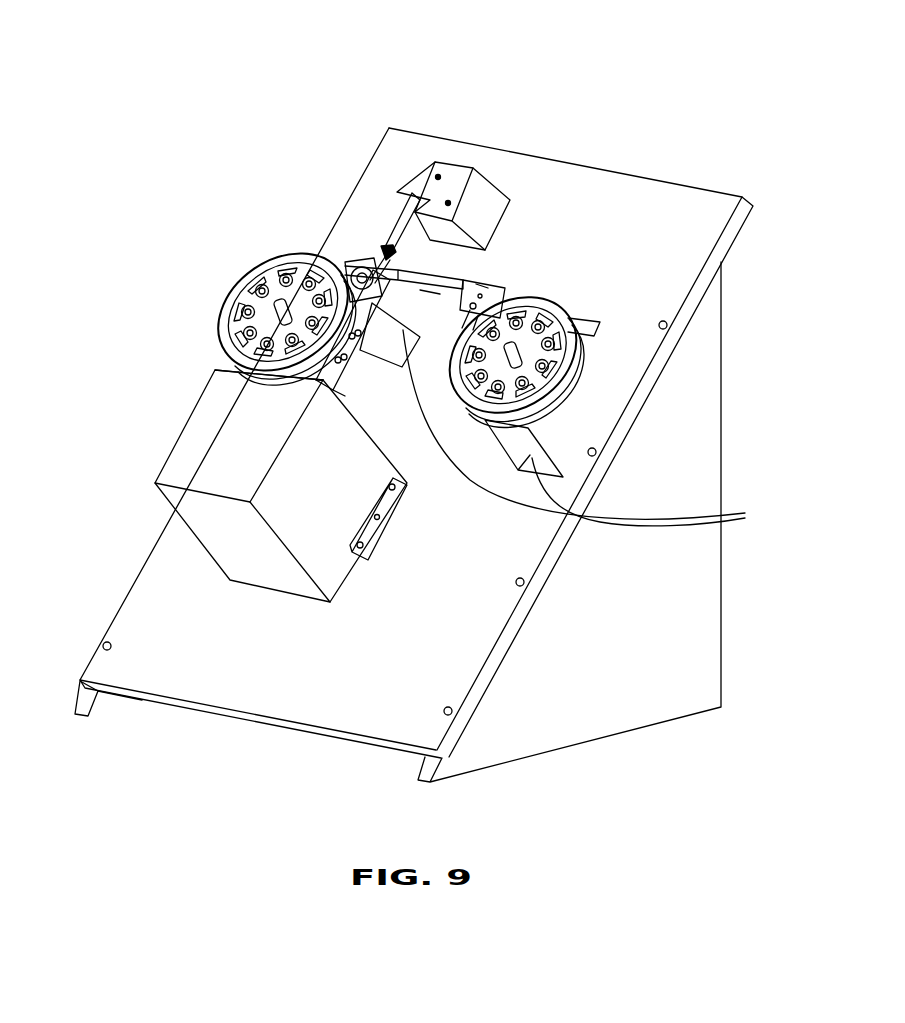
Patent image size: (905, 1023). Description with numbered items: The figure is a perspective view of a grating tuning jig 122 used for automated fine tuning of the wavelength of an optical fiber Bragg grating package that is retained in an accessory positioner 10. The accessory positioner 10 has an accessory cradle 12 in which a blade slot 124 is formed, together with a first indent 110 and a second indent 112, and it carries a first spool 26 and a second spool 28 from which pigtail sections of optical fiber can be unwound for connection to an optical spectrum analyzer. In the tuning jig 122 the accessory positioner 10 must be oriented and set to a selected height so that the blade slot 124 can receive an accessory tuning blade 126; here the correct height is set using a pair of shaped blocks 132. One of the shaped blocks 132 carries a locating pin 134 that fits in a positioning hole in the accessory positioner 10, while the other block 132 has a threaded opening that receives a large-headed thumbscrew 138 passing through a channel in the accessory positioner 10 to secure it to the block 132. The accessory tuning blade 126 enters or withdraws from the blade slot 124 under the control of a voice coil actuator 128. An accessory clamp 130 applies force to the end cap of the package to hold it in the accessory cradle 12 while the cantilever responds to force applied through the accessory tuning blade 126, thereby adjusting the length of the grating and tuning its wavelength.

The accessory positioner 10 is at (231, 250).
The accessory cradle 12 is at (428, 290).
The first spool 26 is at (580, 325).
The second spool 28 is at (230, 302).
The first indent 110 is at (452, 283).
The second indent 112 is at (480, 286).
The tuning jig 122 is at (480, 113).
The blade slot 124 is at (386, 248).
The accessory tuning blade 126 is at (366, 254).
The voice coil actuator 128 is at (222, 430).
The accessory clamp 130 is at (337, 270).
The shaped blocks 132 is at (595, 428).
The locating pin 134 is at (482, 298).
The large-headed thumbscrew 138 is at (352, 266).